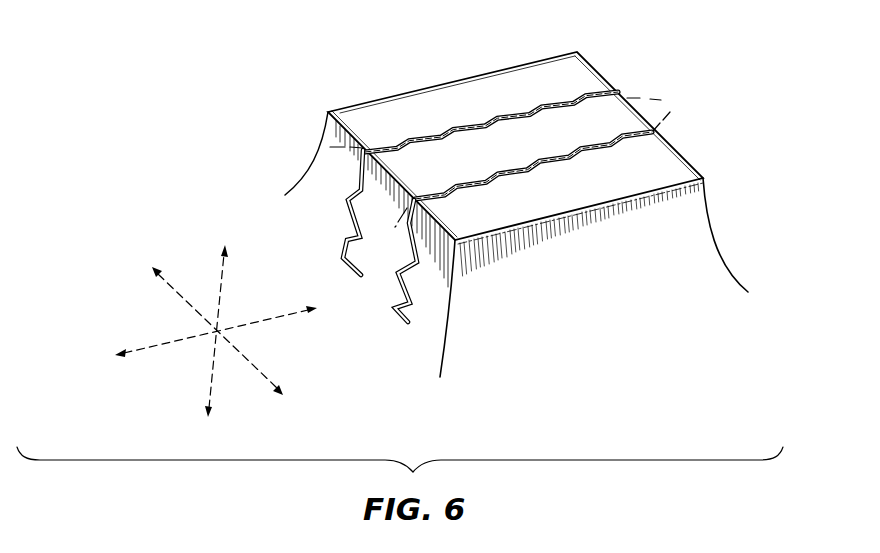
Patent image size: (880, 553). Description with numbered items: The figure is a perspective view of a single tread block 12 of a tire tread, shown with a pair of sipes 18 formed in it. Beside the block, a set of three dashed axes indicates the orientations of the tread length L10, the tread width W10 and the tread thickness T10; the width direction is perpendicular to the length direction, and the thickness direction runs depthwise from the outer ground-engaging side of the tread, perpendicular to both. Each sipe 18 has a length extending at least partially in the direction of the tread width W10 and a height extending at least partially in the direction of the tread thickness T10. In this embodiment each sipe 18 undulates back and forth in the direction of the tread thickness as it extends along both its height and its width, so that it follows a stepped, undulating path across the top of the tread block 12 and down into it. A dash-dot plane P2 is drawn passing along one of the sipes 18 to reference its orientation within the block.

The tread block 12 is at (692, 248).
The sipe 18 is at (510, 112).
The plane P2 is at (707, 137).
The tread width W10 is at (148, 347).
The tread length L10 is at (255, 364).
The tread thickness T10 is at (212, 377).